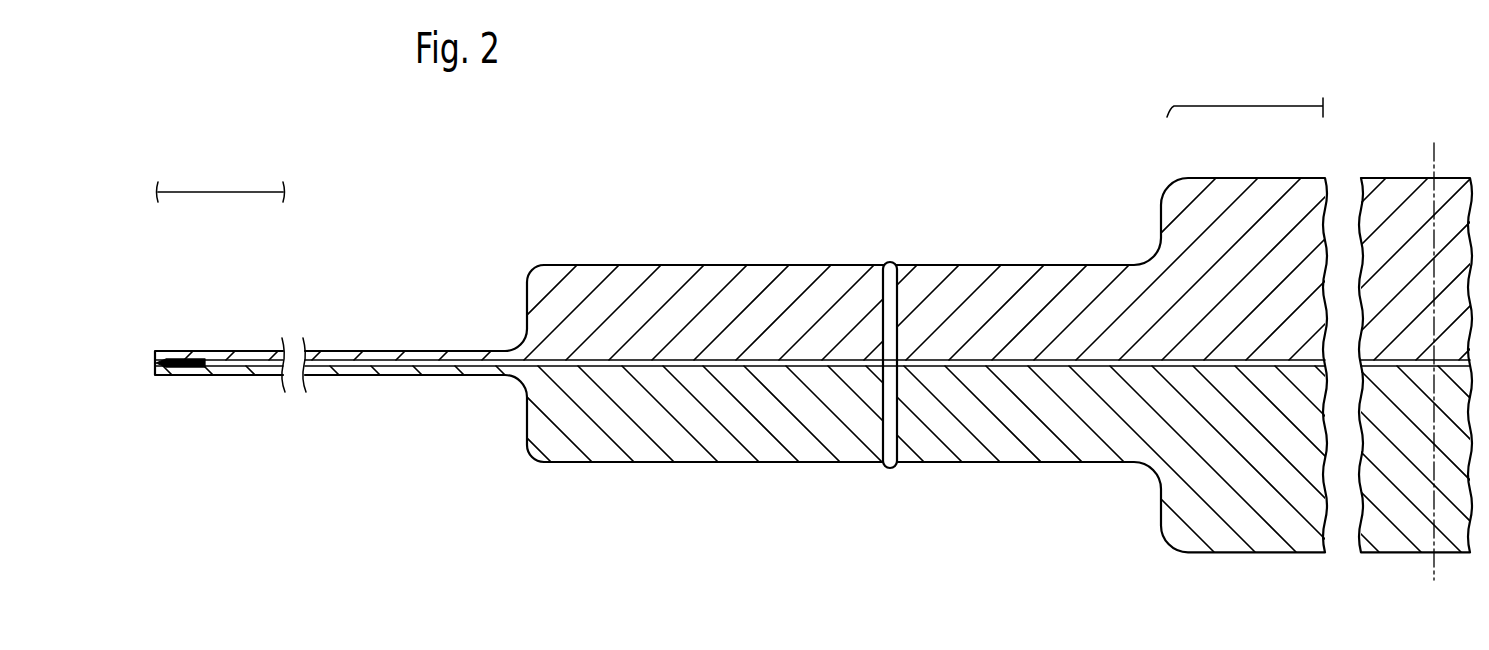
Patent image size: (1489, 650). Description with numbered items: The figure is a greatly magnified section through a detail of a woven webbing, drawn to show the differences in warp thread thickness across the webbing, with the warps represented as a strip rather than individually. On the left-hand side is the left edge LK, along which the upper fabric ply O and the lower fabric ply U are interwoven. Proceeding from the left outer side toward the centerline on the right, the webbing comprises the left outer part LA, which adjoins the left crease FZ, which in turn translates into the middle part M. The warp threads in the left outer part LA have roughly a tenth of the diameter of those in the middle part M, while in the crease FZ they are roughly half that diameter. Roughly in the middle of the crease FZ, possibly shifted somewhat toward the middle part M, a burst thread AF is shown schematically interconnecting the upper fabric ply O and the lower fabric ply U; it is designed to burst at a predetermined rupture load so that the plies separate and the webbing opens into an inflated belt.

The left edge LK is at (182, 388).
The left outer part LA is at (523, 203).
The left crease FZ is at (1157, 143).
The upper fabric ply O is at (963, 236).
The lower fabric ply U is at (944, 477).
The burst thread AF is at (883, 410).
The middle part M is at (1470, 117).